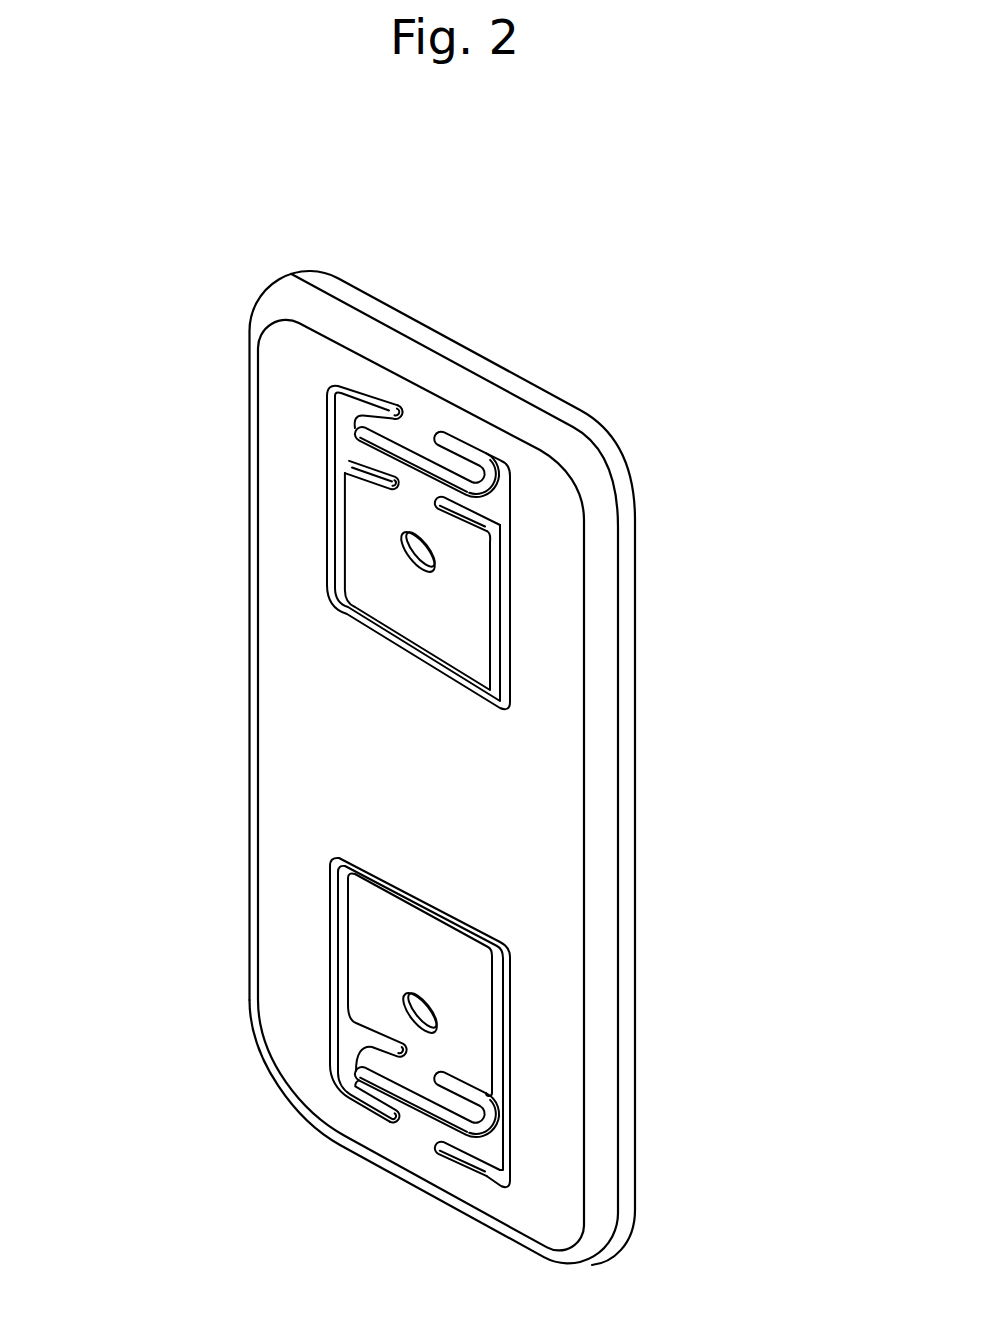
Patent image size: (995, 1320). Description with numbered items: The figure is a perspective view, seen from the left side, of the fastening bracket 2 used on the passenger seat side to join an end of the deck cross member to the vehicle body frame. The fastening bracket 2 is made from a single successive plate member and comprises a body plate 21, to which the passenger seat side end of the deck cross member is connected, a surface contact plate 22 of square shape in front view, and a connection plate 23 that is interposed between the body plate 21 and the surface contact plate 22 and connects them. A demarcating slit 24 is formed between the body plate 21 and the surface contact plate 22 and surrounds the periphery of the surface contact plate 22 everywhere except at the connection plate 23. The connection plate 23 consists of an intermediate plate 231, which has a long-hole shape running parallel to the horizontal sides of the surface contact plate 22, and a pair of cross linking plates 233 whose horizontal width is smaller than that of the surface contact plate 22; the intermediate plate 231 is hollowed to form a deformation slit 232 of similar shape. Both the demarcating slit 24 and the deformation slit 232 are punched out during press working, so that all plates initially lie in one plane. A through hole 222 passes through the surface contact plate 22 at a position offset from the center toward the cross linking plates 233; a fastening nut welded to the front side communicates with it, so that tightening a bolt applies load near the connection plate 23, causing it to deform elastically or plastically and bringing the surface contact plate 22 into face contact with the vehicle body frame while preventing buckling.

The fastening bracket 2 is at (262, 755).
The body plate 21 is at (575, 842).
The surface contact plate 22 is at (410, 623).
The through hole 222 is at (430, 578).
The connection plate 23 is at (165, 348).
The intermediate plate 231 is at (387, 440).
The deformation slit 232 is at (408, 480).
The cross linking plate 233 is at (403, 414).
The demarcating slit 24 is at (341, 622).